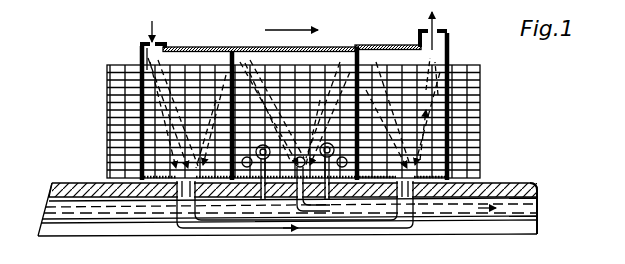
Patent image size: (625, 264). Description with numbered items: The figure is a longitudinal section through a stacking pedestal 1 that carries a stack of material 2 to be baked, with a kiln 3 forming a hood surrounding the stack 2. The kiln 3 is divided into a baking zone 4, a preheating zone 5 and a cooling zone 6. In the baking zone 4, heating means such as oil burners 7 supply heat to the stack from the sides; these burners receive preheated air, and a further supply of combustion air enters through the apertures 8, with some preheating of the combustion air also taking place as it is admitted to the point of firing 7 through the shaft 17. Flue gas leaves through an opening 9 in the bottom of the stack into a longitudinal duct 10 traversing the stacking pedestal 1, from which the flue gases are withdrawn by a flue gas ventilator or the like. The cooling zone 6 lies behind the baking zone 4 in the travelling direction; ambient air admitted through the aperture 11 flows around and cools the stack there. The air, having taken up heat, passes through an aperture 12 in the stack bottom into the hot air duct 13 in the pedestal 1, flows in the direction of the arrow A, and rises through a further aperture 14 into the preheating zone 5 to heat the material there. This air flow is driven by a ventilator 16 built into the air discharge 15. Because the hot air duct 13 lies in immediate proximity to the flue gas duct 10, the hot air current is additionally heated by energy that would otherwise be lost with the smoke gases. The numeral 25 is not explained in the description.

The stacking pedestal 1 is at (503, 183).
The stack of material 2 is at (480, 84).
The kiln 3 is at (371, 49).
The baking zone 4 is at (318, 80).
The preheating zone 5 is at (386, 60).
The cooling zone 6 is at (204, 62).
The oil burners 7 is at (272, 60).
The apertures 8 is at (245, 63).
The opening 9 is at (300, 188).
The longitudinal duct 10 is at (537, 205).
The aperture 11 is at (160, 44).
The aperture 12 is at (181, 227).
The hot air duct 13 is at (524, 224).
The aperture 14 is at (410, 180).
The air discharge 15 is at (449, 39).
The ventilator 16 is at (426, 30).
The shaft 17 is at (538, 192).
The element 25 is at (318, 263).
The arrow A is at (289, 231).